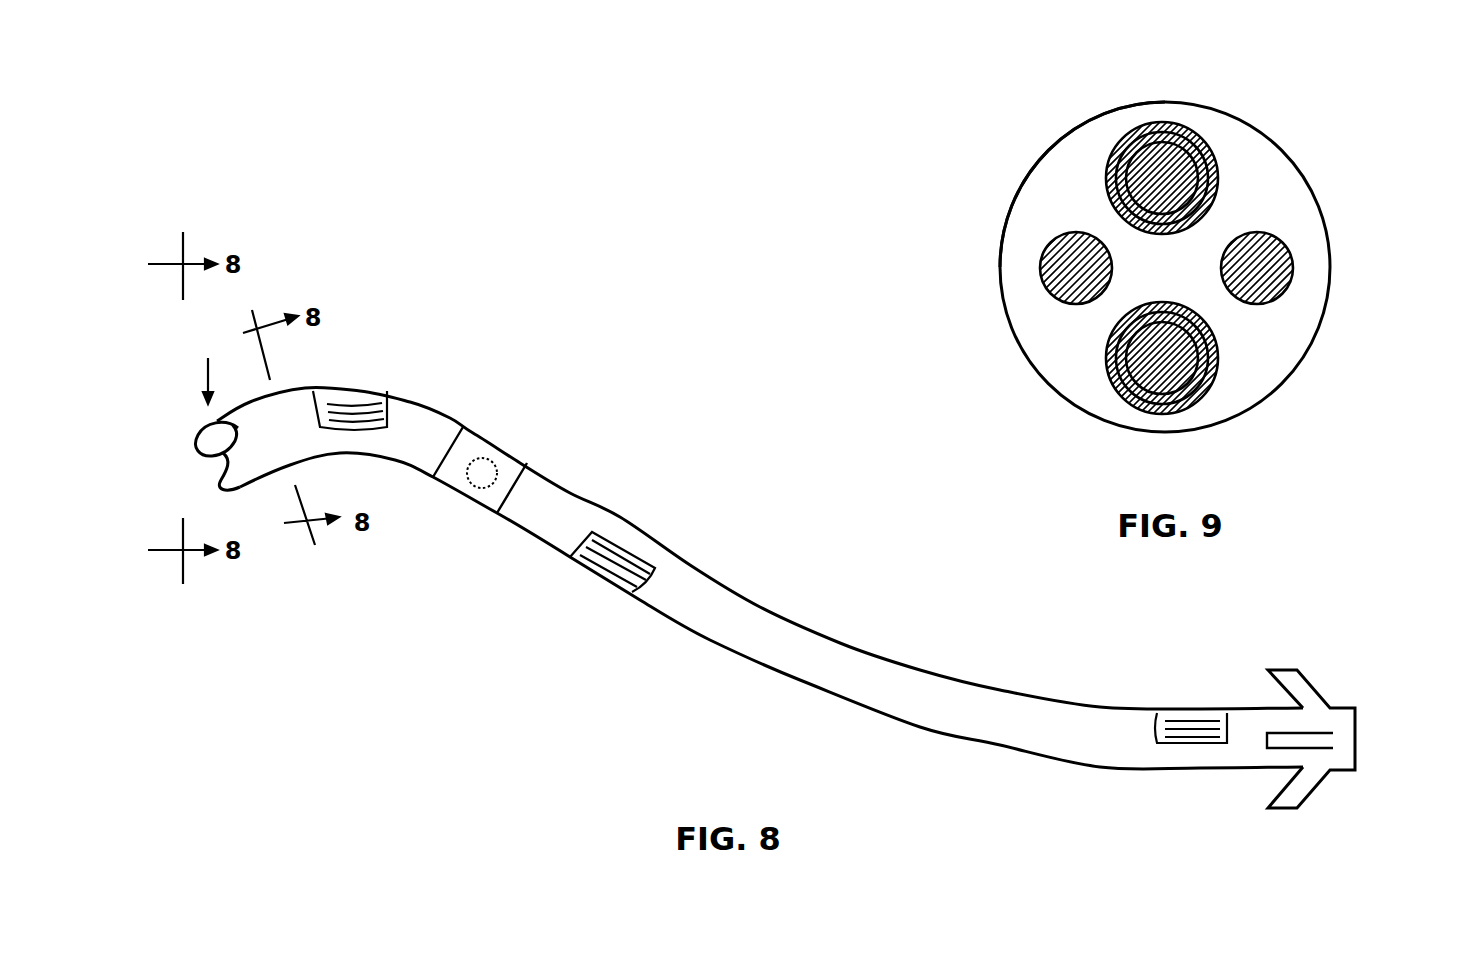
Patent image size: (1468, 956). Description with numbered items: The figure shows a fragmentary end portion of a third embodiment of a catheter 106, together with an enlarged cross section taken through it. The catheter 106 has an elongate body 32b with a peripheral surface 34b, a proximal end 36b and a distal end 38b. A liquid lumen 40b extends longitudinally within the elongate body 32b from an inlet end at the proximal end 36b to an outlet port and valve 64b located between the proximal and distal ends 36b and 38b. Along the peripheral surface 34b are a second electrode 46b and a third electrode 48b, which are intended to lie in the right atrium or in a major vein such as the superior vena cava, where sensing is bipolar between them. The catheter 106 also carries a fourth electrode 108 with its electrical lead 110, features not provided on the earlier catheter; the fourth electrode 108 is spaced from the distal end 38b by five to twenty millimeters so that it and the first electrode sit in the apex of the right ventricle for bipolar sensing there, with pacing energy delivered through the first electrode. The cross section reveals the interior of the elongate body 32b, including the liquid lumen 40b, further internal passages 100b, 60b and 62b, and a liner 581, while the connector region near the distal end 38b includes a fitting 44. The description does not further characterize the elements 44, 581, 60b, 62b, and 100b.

In FIG. 8, the elongate body 32b is at (688, 556).
In FIG. 9, the elongate body 32b is at (1058, 162).
In FIG. 8, the peripheral surface 34b is at (773, 600).
In FIG. 9, the peripheral surface 34b is at (1190, 432).
In FIG. 8, the proximal end 36b is at (194, 460).
In FIG. 8, the distal end 38b is at (1360, 723).
In FIG. 9, the liquid lumen 40b is at (1180, 160).
In FIG. 8, the connector slot 44 is at (1363, 736).
In FIG. 8, the second electrode 46b is at (605, 569).
In FIG. 8, the third electrode 48b is at (366, 410).
In FIG. 9, the lumen liner 581 is at (1177, 356).
In FIG. 9, the wire conduit 60b is at (1048, 266).
In FIG. 9, the wire conduit 62b is at (1287, 266).
In FIG. 8, the outlet port and valve 64b is at (510, 451).
In FIG. 9, the lumen 100b is at (1148, 362).
In FIG. 8, the catheter 106 is at (760, 578).
In FIG. 9, the catheter 106 is at (1157, 272).
In FIG. 8, the fourth electrode 108 is at (1190, 722).
In FIG. 9, the electrical lead 110 is at (1221, 176).